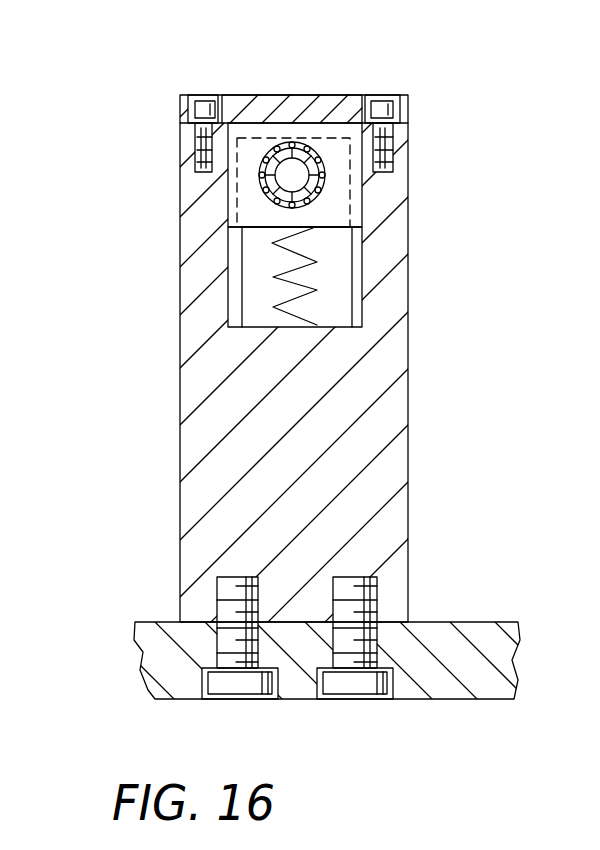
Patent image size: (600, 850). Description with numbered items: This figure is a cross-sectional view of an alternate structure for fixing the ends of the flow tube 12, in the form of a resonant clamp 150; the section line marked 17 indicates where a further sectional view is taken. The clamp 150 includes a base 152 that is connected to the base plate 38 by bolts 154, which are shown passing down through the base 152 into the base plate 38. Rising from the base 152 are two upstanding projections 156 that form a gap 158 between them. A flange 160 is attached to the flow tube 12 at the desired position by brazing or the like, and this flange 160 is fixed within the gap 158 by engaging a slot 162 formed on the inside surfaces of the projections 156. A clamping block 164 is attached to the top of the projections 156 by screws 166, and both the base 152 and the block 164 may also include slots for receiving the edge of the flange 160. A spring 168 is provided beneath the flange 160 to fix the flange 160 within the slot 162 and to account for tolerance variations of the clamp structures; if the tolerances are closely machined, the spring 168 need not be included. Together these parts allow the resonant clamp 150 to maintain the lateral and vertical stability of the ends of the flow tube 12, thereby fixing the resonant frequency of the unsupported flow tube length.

The flow tube 12 is at (303, 145).
The section line 17- 17 is at (258, 77).
The base plate 38 is at (448, 682).
The resonant clamp 150 is at (166, 242).
The base 152 is at (382, 350).
The bolts 154 is at (358, 682).
The upstanding projections 156 is at (190, 142).
The gap 158 is at (328, 252).
The flange 160 is at (338, 210).
The slot 162 is at (230, 296).
The clamping block 164 is at (244, 100).
The screws 166 is at (201, 108).
The spring 168 is at (313, 266).